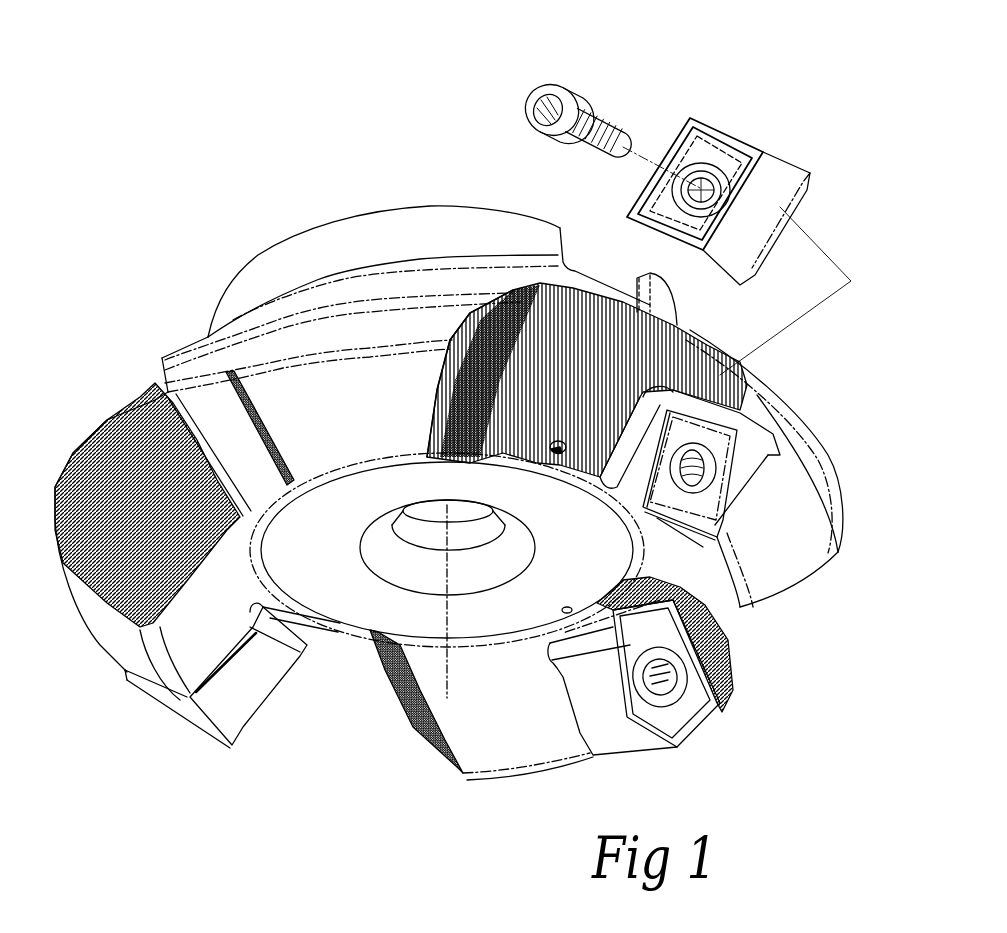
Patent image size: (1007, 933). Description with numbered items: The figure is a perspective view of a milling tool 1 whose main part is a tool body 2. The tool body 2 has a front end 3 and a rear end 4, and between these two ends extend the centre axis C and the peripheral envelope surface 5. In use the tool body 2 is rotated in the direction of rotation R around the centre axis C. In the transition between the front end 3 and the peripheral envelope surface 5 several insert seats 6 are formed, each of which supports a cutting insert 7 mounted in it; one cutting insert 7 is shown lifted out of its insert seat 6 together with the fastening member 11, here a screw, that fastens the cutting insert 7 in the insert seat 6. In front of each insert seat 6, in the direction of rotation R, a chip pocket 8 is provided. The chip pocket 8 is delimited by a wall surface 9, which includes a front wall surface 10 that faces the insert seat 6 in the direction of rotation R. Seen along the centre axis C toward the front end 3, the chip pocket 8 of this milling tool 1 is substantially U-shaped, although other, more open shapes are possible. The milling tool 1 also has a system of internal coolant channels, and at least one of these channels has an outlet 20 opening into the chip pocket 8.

The milling tool 1 is at (252, 175).
The tool body 2 is at (790, 553).
The front end 3 is at (343, 600).
The rear end 4 is at (380, 212).
The peripheral envelope surface 5 is at (352, 344).
The insert seat 6 is at (723, 458).
The cutting insert 7 is at (772, 205).
The chip pocket 8 is at (572, 338).
The wall surface 9 is at (665, 340).
The front wall surface 10 is at (445, 407).
The fastening member 11 is at (590, 78).
The outlet 20 is at (560, 442).
The direction of rotation R is at (420, 243).
The centre axis C is at (447, 678).